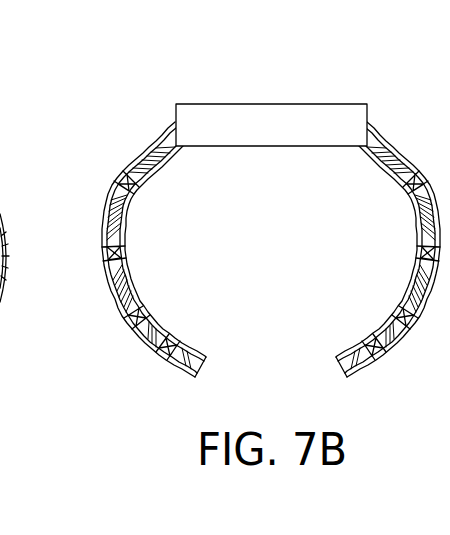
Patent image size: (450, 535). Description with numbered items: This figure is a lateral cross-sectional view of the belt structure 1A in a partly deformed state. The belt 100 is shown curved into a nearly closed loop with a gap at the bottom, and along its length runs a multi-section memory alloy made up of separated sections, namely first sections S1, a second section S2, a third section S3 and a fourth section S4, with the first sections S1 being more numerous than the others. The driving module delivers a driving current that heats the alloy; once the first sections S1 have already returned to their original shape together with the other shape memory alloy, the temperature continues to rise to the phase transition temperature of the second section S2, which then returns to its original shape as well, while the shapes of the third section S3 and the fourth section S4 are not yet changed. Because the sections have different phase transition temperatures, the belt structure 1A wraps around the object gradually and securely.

The belt structure 1A is at (366, 54).
The belt 100 is at (113, 288).
The first section S1 is at (108, 210).
The second section S2 is at (120, 173).
The third section S3 is at (112, 247).
The fourth section S4 is at (133, 327).